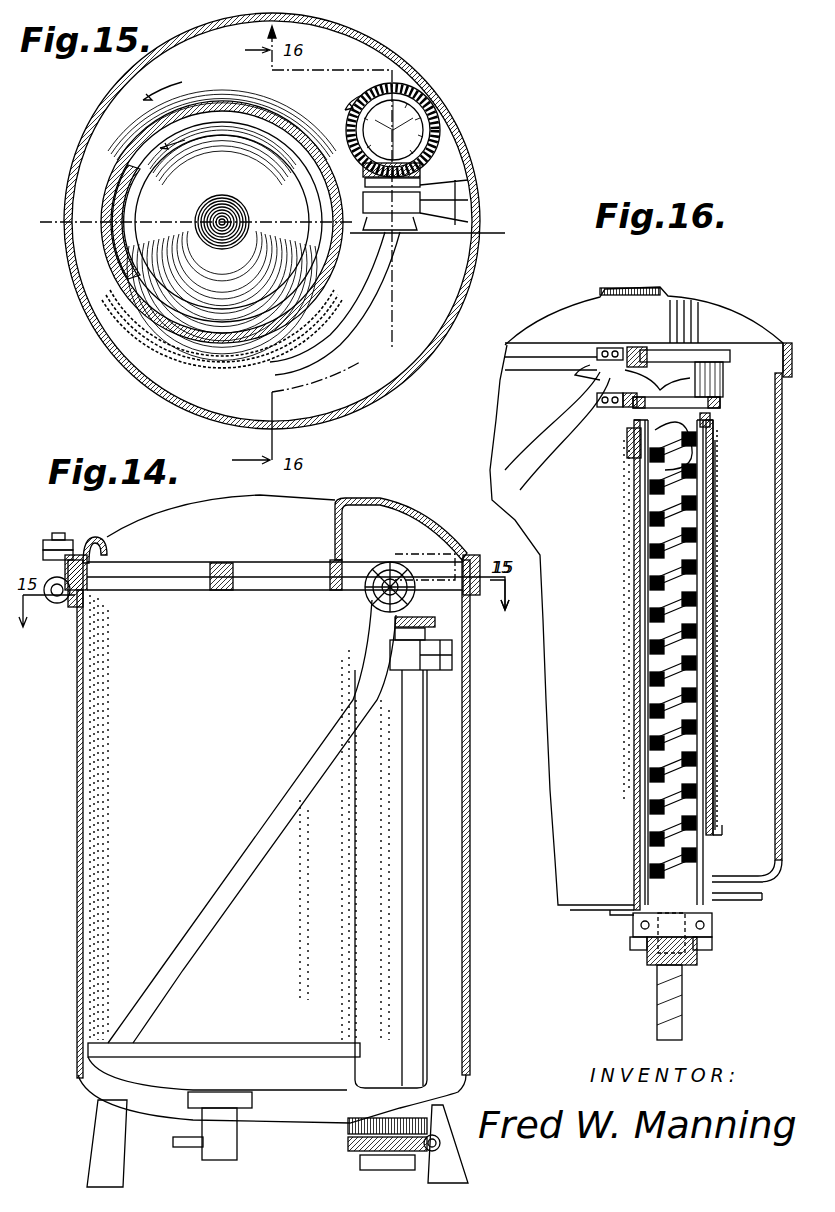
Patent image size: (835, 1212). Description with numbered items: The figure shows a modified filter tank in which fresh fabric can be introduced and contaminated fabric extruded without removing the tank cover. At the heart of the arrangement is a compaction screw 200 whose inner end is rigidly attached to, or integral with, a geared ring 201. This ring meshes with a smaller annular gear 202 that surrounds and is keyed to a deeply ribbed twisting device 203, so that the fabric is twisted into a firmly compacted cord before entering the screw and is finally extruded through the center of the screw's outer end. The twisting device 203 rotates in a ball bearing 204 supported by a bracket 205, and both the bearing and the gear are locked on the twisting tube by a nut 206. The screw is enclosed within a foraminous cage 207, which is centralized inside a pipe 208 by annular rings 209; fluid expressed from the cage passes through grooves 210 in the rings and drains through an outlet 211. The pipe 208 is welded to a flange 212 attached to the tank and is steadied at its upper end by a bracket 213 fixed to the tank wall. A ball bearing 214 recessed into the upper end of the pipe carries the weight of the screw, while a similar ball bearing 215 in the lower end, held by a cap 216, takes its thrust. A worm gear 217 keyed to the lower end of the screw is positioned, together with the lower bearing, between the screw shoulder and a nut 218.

In FIG. 16, the compaction screw 200 is at (652, 575).
In FIG. 15, the geared ring 201 is at (438, 148).
In FIG. 16, the geared ring 201 is at (702, 402).
In FIG. 14, the geared ring 201 is at (435, 622).
In FIG. 15, the annular gear 202 is at (372, 178).
In FIG. 16, the annular gear 202 is at (640, 351).
In FIG. 15, the twisting device 203 is at (397, 230).
In FIG. 16, the twisting device 203 is at (595, 380).
In FIG. 14, the twisting device 203 is at (402, 548).
In FIG. 16, the ball bearing 204 is at (621, 348).
In FIG. 15, the bracket 205 is at (457, 214).
In FIG. 16, the bracket 205 is at (626, 409).
In FIG. 14, the bracket 205 is at (440, 580).
In FIG. 15, the nut 206 is at (420, 172).
In FIG. 16, the nut 206 is at (722, 362).
In FIG. 16, the foraminous cage 207 is at (650, 780).
In FIG. 16, the pipe 208 is at (640, 718).
In FIG. 14, the pipe 208 is at (395, 852).
In FIG. 16, the annular rings 209 is at (655, 530).
In FIG. 16, the grooves 210 is at (650, 505).
In FIG. 16, the outlet 211 is at (756, 900).
In FIG. 16, the flange 212 is at (612, 915).
In FIG. 16, the bracket 213 is at (630, 447).
In FIG. 14, the bracket 213 is at (435, 672).
In FIG. 16, the ball bearing 214 is at (712, 422).
In FIG. 16, the ball bearing 215 is at (713, 931).
In FIG. 16, the cap 216 is at (700, 945).
In FIG. 16, the worm gear 217 is at (637, 948).
In FIG. 14, the worm gear 217 is at (348, 1143).
In FIG. 16, the nut 218 is at (655, 975).
In FIG. 14, the nut 218 is at (360, 1165).